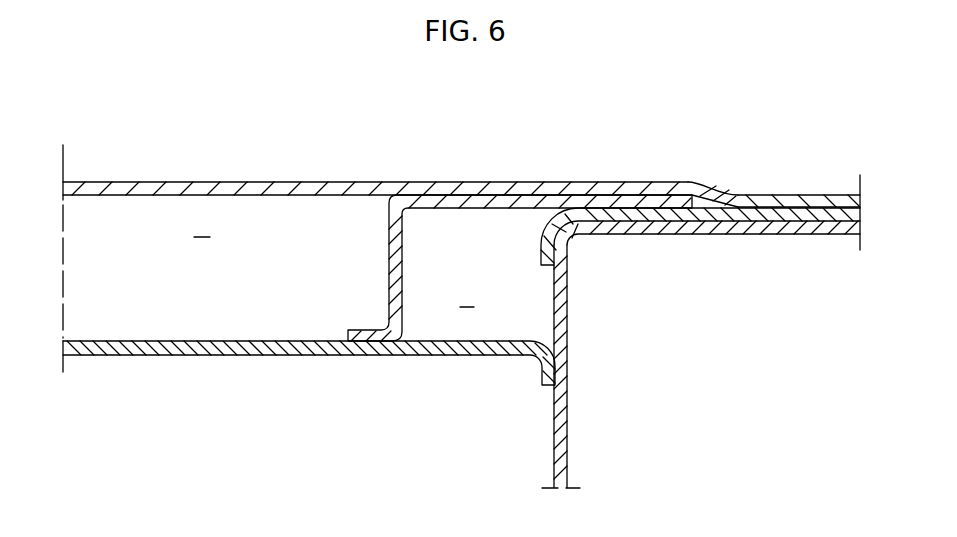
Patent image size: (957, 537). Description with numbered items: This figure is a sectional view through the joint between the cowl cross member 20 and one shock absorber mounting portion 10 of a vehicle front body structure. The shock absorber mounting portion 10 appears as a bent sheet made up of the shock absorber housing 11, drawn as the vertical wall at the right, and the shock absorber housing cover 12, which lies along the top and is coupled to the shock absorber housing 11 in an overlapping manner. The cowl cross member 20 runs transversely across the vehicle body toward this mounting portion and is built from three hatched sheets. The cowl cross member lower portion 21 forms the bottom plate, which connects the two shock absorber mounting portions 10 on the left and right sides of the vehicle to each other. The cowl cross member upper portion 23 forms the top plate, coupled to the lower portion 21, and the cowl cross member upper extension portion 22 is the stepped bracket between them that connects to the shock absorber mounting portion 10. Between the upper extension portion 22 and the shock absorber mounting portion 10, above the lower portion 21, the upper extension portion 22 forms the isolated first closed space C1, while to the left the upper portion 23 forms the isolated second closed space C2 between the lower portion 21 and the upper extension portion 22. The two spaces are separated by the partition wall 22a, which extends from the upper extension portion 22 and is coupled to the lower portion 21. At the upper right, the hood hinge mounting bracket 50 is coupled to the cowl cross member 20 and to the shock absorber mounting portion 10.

The shock absorber mounting portion 10 is at (700, 348).
The shock absorber housing 11 is at (606, 366).
The shock absorber housing cover 12 is at (793, 215).
The cowl cross member 20 is at (461, 147).
The cowl cross member lower portion 21 is at (203, 350).
The cowl cross member upper extension portion 22 is at (497, 270).
The partition wall 22a is at (388, 242).
The cowl cross member upper portion 23 is at (295, 181).
The hood hinge mounting bracket 50 is at (772, 195).
The first closed space C1 is at (467, 307).
The second closed space C2 is at (202, 237).